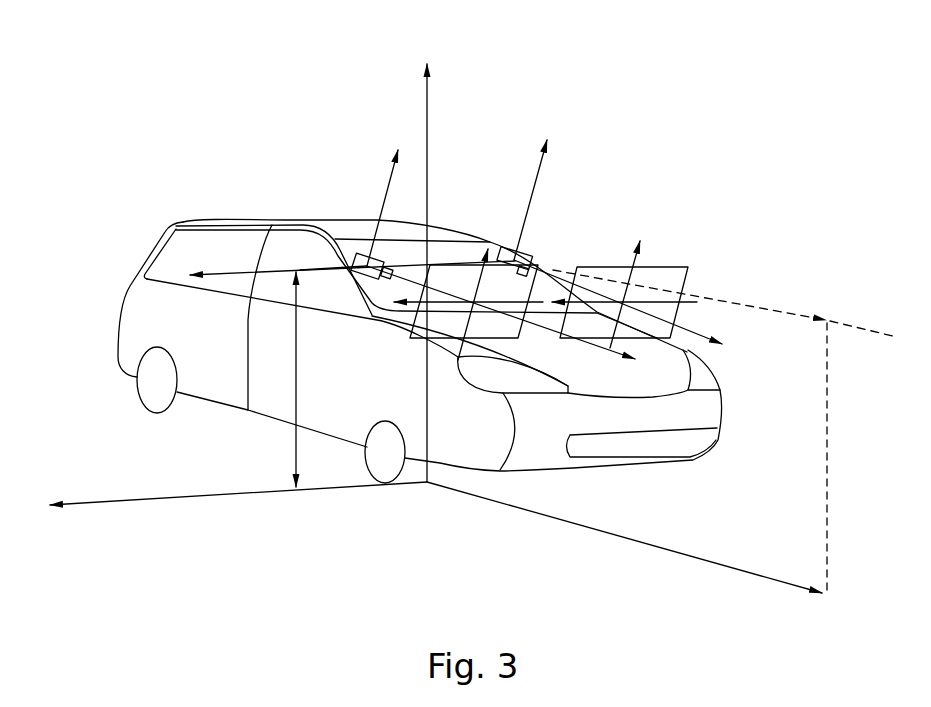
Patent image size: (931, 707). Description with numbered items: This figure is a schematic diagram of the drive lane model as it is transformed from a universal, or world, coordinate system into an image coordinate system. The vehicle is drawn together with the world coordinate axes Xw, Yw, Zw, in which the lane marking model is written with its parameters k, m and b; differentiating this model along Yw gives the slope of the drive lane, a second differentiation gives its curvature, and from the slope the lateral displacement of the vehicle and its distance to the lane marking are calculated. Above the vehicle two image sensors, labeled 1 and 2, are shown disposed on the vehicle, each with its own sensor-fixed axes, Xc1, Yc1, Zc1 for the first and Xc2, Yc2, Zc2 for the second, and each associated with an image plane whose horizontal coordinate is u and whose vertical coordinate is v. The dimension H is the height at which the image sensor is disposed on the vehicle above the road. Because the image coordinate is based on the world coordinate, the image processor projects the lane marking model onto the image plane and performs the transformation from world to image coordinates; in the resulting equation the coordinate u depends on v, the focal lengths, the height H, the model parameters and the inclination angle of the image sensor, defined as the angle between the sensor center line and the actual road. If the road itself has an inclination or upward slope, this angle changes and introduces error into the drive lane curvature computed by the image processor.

The first camera 1 is at (514, 262).
The second camera 2 is at (373, 267).
The world coordinate axis Xw is at (238, 485).
The world coordinate axis Yw is at (662, 431).
The world coordinate axis Zw is at (433, 252).
The height of image sensor H is at (310, 379).
The first camera X axis Xc1 is at (351, 261).
The first camera Y axis Yc1 is at (632, 311).
The first camera Z axis Zc1 is at (538, 188).
The second camera X axis Xc2 is at (333, 259).
The second camera Y axis Yc2 is at (512, 325).
The second camera Z axis Zc2 is at (394, 199).
The horizontal coordinate of the image plane u is at (538, 294).
The vertical coordinate of the image plane v is at (549, 292).